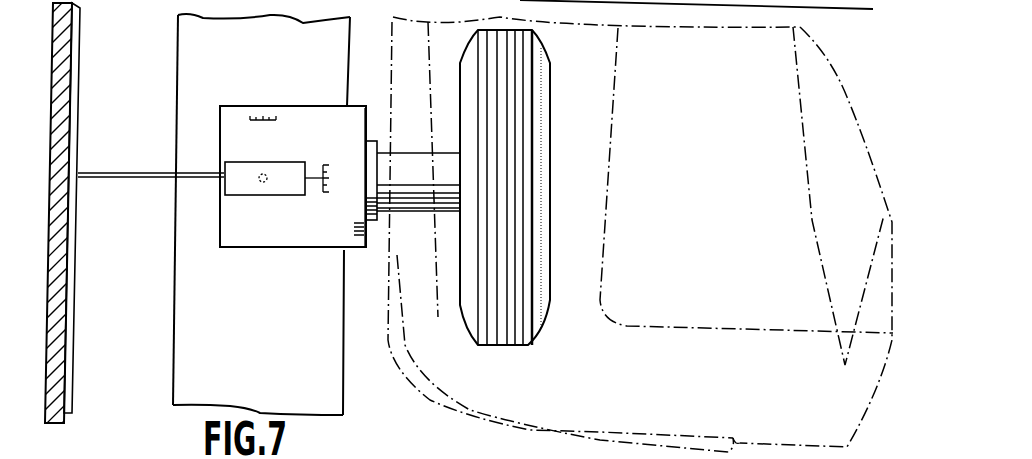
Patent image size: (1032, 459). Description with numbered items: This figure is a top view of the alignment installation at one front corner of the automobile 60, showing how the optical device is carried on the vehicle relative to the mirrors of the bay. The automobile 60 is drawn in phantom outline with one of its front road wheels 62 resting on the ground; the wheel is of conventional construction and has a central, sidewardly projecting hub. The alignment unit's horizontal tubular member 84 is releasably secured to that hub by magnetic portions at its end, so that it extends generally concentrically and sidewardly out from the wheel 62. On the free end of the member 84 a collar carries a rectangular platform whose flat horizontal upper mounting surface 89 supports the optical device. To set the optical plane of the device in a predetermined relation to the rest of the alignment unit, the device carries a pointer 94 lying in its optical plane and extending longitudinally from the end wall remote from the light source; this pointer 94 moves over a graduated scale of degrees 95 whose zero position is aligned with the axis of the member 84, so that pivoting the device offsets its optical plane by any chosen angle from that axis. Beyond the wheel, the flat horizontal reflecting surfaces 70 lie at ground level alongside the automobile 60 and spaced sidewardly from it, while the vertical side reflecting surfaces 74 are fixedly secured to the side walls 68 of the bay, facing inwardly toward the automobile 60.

The automobile 60 is at (468, 374).
The front road wheel 62 is at (520, 137).
The side walls 68 is at (58, 363).
The reflecting surfaces 70 is at (178, 222).
The side reflecting surfaces 74 is at (78, 48).
The horizontal tubular member 84 is at (422, 147).
The upper mounting surface 89 is at (331, 120).
The pointer 94 is at (318, 172).
The graduated scale of degrees 95 is at (329, 167).